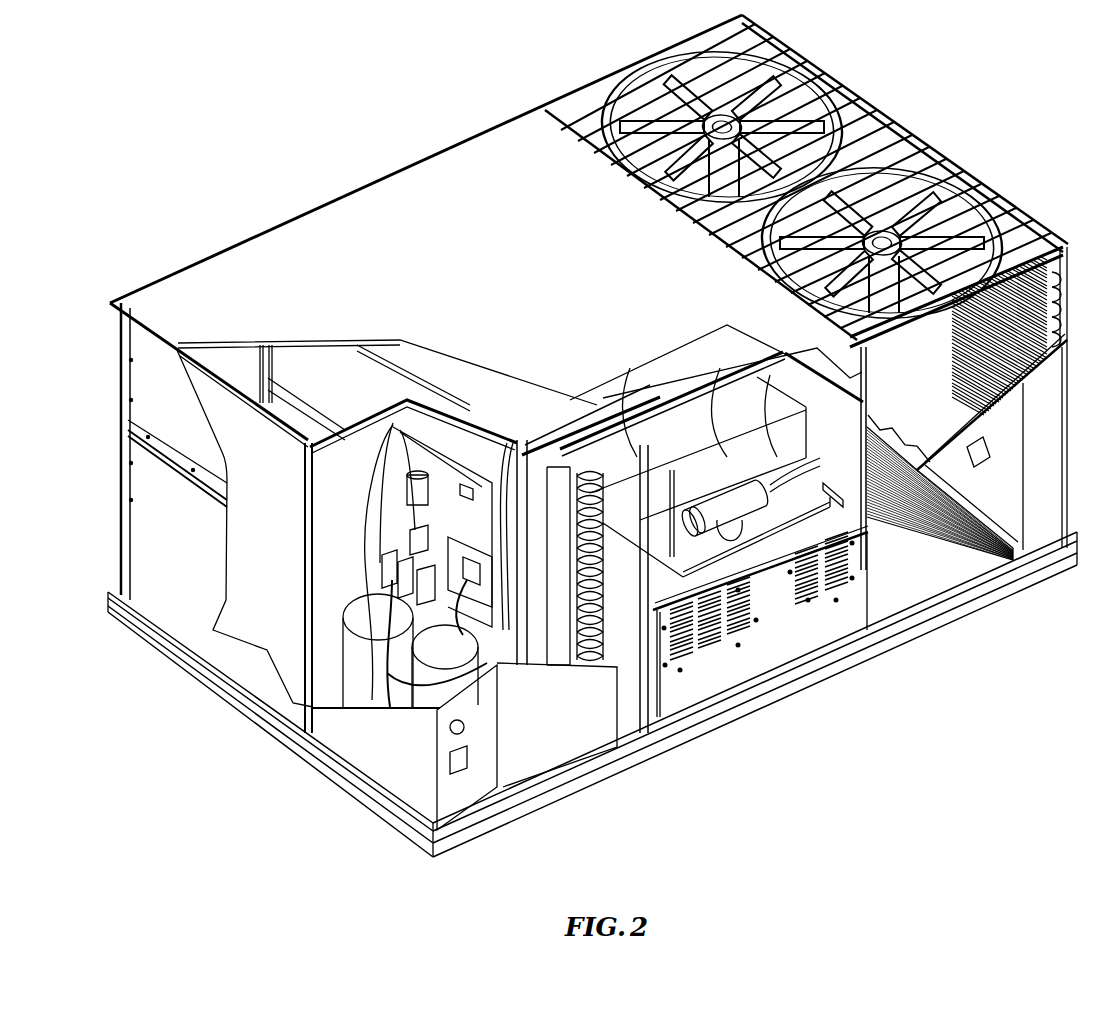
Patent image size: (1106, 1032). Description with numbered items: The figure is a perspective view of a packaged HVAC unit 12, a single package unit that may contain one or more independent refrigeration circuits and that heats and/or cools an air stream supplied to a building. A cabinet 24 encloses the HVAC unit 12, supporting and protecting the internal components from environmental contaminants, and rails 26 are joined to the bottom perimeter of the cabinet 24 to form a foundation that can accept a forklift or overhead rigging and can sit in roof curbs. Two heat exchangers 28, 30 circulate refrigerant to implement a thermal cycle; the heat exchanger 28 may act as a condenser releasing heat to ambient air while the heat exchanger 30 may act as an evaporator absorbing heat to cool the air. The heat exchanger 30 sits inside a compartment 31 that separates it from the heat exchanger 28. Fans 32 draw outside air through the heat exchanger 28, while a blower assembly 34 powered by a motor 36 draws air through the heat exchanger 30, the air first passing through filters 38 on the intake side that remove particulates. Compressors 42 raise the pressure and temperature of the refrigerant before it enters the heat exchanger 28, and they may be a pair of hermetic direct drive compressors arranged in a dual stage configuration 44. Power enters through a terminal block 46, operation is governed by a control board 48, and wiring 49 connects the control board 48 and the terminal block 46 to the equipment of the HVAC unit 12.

The HVAC unit 12 is at (316, 162).
The cabinet 24 is at (162, 556).
The rails 26 is at (185, 672).
The heat exchanger 28 is at (1064, 298).
The heat exchanger 30 is at (598, 665).
The compartment 31 is at (635, 470).
The fans 32 is at (893, 236).
The blower assembly 34 is at (787, 457).
The motor 36 is at (737, 470).
The filters 38 is at (553, 480).
The compressors 42 is at (352, 668).
The dual stage configuration 44 is at (345, 602).
The terminal block 46 is at (395, 548).
The control board 48 is at (473, 457).
The wiring 49 is at (575, 430).